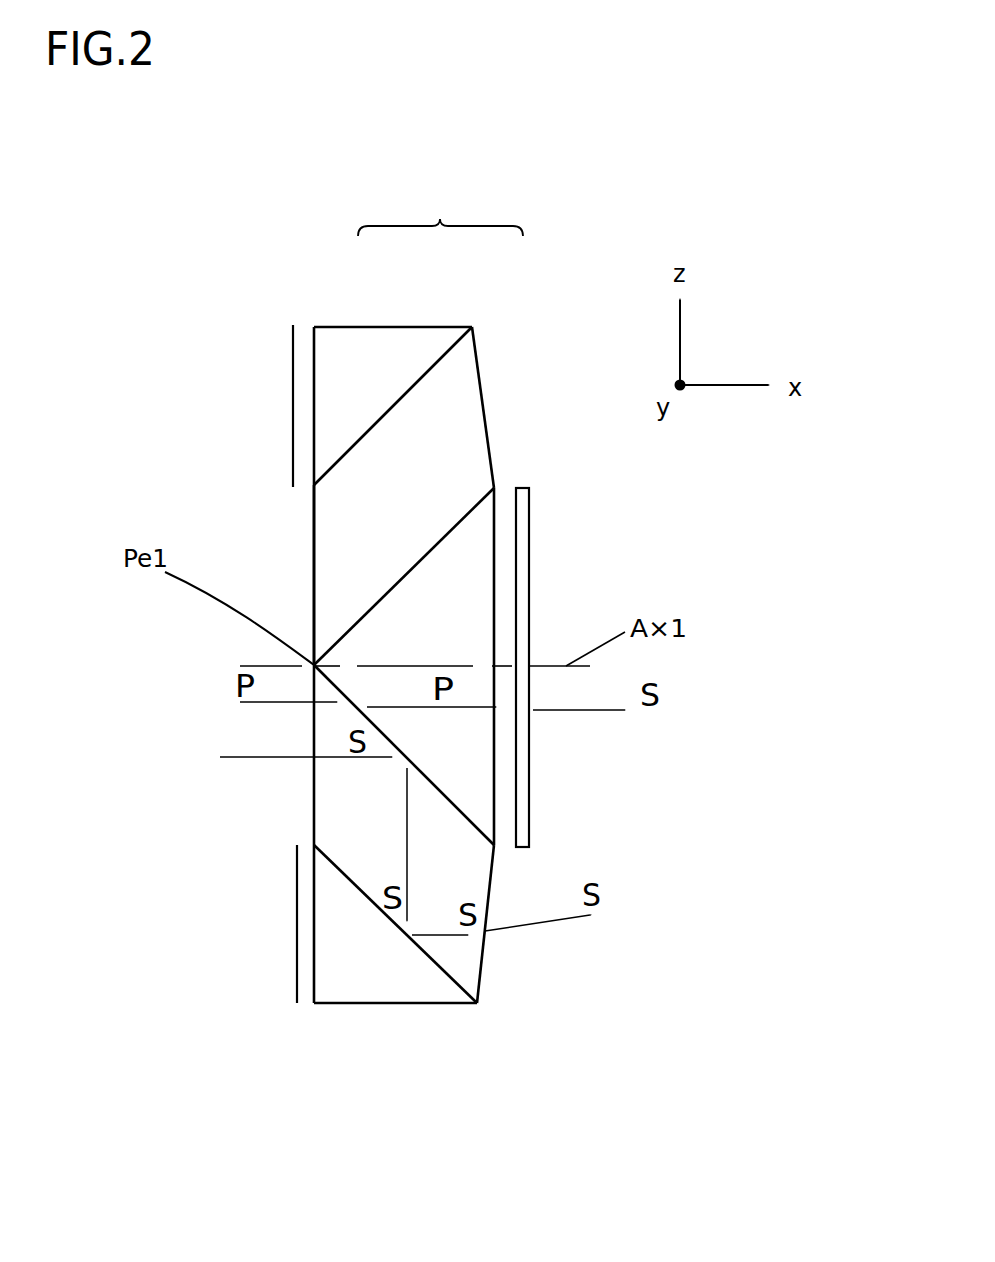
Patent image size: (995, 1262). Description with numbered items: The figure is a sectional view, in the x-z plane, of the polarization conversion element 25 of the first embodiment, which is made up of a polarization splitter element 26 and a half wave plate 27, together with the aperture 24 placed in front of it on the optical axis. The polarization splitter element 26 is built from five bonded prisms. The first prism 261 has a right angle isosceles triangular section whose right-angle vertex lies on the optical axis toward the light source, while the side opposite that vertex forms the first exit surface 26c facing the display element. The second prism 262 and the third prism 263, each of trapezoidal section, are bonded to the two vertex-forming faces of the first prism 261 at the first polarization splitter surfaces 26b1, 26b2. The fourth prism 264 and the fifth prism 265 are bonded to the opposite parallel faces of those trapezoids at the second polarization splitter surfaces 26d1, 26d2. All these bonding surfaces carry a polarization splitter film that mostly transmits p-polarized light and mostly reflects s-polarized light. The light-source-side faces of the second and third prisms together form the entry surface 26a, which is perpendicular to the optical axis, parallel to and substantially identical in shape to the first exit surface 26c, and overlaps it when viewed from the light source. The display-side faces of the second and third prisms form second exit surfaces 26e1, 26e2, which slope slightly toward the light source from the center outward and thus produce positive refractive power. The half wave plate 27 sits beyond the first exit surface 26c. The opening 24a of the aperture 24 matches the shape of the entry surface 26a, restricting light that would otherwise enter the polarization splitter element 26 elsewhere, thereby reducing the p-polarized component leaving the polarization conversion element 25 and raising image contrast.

The aperture 24 is at (293, 325).
The opening of the aperture 24a is at (296, 845).
The polarization conversion element 25 is at (440, 209).
The polarization splitter element 26 is at (466, 679).
The entry surface 26a is at (313, 552).
The first polarization splitter surface 26b1 is at (363, 617).
The first polarization splitter surface 26b2 is at (332, 680).
The first exit surface 26c is at (495, 797).
The second polarization splitter surface 26d1 is at (397, 397).
The second polarization splitter surface 26d2 is at (425, 957).
The second exit surface 26e1 is at (478, 371).
The second exit surface 26e2 is at (490, 890).
The half wave plate 27 is at (520, 488).
The first prism 261 is at (450, 644).
The second prism 262 is at (370, 544).
The third prism 263 is at (387, 854).
The fourth prism 264 is at (370, 382).
The fifth prism 265 is at (385, 966).